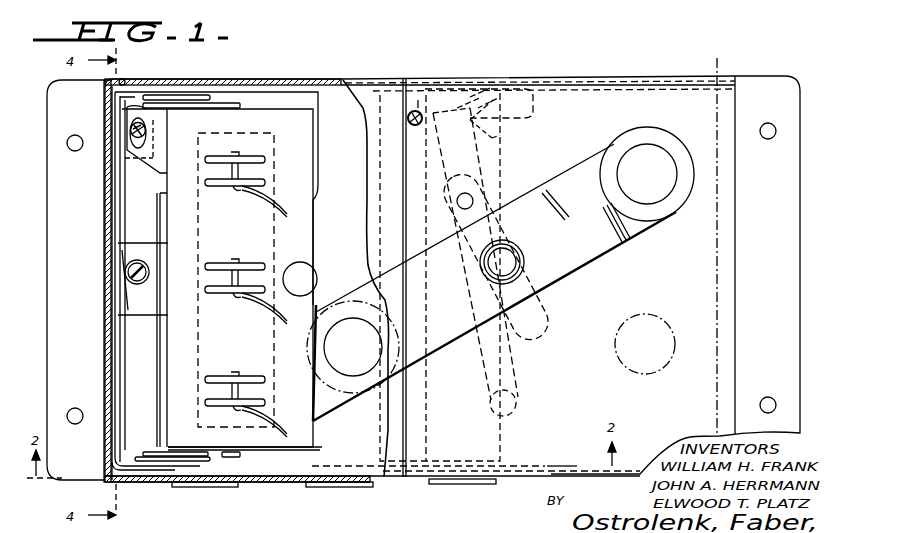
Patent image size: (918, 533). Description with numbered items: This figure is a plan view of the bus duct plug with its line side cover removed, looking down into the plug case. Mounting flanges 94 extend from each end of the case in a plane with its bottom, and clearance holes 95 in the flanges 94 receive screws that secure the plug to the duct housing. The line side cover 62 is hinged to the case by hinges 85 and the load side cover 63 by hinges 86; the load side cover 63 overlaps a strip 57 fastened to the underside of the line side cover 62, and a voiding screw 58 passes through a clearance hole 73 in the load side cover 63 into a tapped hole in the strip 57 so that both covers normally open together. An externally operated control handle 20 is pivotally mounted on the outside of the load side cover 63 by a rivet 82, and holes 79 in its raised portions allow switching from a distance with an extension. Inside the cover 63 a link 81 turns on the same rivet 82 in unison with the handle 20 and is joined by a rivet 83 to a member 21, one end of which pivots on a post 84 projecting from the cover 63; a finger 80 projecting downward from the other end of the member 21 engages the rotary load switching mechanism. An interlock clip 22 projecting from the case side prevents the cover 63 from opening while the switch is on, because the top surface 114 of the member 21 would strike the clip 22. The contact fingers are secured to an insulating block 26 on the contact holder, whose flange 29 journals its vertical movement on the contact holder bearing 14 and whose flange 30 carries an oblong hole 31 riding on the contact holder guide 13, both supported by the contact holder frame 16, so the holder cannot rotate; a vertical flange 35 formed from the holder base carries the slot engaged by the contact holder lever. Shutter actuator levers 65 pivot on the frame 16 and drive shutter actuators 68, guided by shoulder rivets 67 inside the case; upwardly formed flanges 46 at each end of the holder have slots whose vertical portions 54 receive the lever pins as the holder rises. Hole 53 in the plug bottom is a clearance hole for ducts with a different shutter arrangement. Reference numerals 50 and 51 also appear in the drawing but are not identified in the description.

The contact holder guide 13 is at (146, 132).
The contact holder bearing 14 is at (138, 260).
The contact holder frame 16 is at (112, 110).
The control handle 20 is at (606, 258).
The member 21 is at (500, 140).
The interlock clip 22 is at (535, 106).
The insulating block 26 is at (112, 444).
The flange 29 is at (122, 305).
The flange 30 is at (146, 163).
The oblong hole 31 is at (147, 125).
The vertical flange 35 is at (158, 345).
The upwardly formed flange 46 is at (237, 460).
The base plate 50 is at (277, 449).
The contact assembly 51 is at (260, 133).
The hole 53 is at (300, 262).
The vertical portion 54 is at (225, 103).
The strip 57 is at (380, 441).
The voiding screw 58 is at (418, 100).
The line side cover 62 is at (305, 80).
The load side cover 63 is at (628, 76).
The shutter actuator lever 65 is at (184, 95).
The shoulder rivet 67 is at (124, 80).
The shutter actuator 68 is at (138, 92).
The hole 73 is at (410, 121).
The hole 79 is at (662, 146).
The finger 80 is at (466, 95).
The link 81 is at (539, 283).
The rivet 82 is at (516, 251).
The rivet 83 is at (465, 192).
The post 84 is at (517, 400).
The hinge 85 is at (215, 487).
The hinge 86 is at (485, 484).
The mounting flange 94 is at (765, 82).
The clearance hole 95 is at (73, 151).
The top surface 114 is at (489, 105).